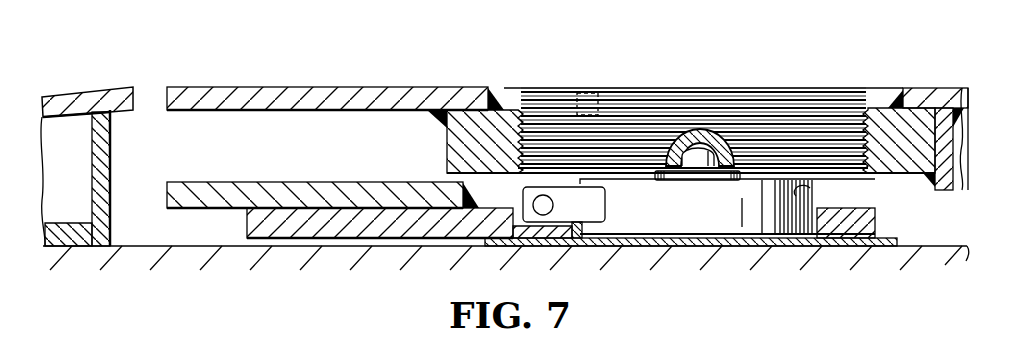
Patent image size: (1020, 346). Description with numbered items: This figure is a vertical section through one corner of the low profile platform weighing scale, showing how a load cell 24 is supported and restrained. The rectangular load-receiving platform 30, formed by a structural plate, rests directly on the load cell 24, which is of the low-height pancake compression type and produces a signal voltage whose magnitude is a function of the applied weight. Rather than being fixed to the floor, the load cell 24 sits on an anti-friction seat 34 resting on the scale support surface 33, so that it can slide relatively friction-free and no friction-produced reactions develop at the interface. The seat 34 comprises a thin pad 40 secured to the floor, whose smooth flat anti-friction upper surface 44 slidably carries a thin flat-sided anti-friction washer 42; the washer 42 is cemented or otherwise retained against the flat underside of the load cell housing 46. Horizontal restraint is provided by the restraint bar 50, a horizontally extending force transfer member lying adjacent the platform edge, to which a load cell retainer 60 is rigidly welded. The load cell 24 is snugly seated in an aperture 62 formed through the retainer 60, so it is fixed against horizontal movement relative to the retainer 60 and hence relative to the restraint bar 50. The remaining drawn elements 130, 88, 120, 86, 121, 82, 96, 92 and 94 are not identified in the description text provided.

The rail flange 130 is at (103, 86).
The load-receiving platform 30 is at (268, 87).
The restraint bar 50 is at (333, 182).
The scale support surface 33 is at (159, 246).
The load cell retainer 60 is at (333, 222).
The end block 88 is at (500, 115).
The thread start 120 is at (515, 92).
The threaded shaft 86 is at (565, 97).
The stop 121 is at (595, 95).
The adjusting screw 82 is at (670, 86).
The dome cap 96 is at (703, 128).
The load cell 24 is at (762, 178).
The end block 92 is at (890, 105).
The nut 94 is at (702, 176).
The aperture 62 is at (815, 191).
The pad 40 is at (863, 210).
The anti-friction seat 34 is at (900, 235).
The anti-friction washer 42 is at (604, 225).
The load cell housing 46 is at (664, 224).
The anti-friction upper surface 44 is at (727, 212).